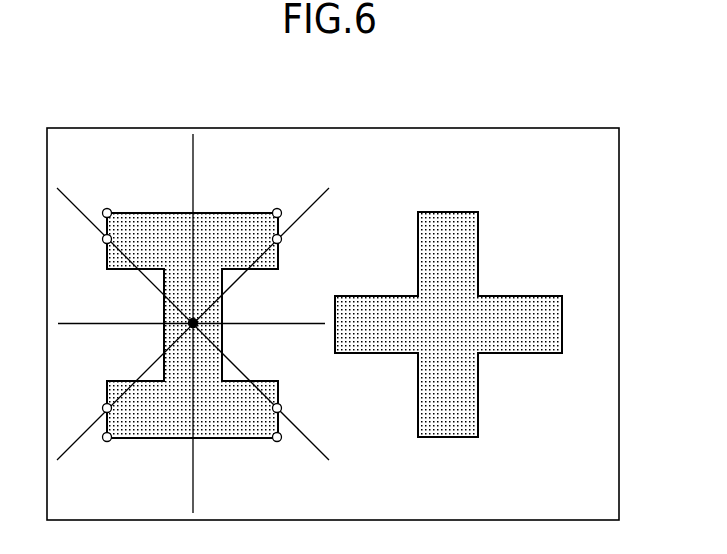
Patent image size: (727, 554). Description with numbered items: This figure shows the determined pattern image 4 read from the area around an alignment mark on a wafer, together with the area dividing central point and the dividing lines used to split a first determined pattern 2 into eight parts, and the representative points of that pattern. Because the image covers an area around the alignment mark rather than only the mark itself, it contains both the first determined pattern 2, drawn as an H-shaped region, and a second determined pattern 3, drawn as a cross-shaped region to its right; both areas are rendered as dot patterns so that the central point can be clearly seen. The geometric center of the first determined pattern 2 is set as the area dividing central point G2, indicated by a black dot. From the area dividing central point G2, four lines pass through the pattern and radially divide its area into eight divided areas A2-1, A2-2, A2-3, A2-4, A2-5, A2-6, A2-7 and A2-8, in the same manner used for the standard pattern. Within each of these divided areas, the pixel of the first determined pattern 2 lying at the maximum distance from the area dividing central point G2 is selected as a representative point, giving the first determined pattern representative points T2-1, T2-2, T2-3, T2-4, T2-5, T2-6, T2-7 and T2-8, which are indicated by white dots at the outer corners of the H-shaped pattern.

The first determined pattern 2 is at (211, 212).
The second determined pattern 3 is at (461, 212).
The determined pattern image 4 is at (317, 128).
The area dividing central point G2 is at (193, 327).
The first determined pattern representative point T2-1 is at (275, 209).
The first determined pattern representative point T2-2 is at (281, 242).
The first determined pattern representative point T2-3 is at (280, 405).
The first determined pattern representative point T2-4 is at (276, 441).
The first determined pattern representative point T2-5 is at (108, 441).
The first determined pattern representative point T2-6 is at (104, 405).
The first determined pattern representative point T2-7 is at (104, 242).
The first determined pattern representative point T2-8 is at (109, 209).
The divided area A2-1 is at (245, 228).
The divided area A2-2 is at (261, 256).
The divided area A2-3 is at (259, 340).
The divided area A2-4 is at (261, 421).
The divided area A2-5 is at (135, 421).
The divided area A2-6 is at (125, 392).
The divided area A2-7 is at (125, 309).
The divided area A2-8 is at (125, 231).